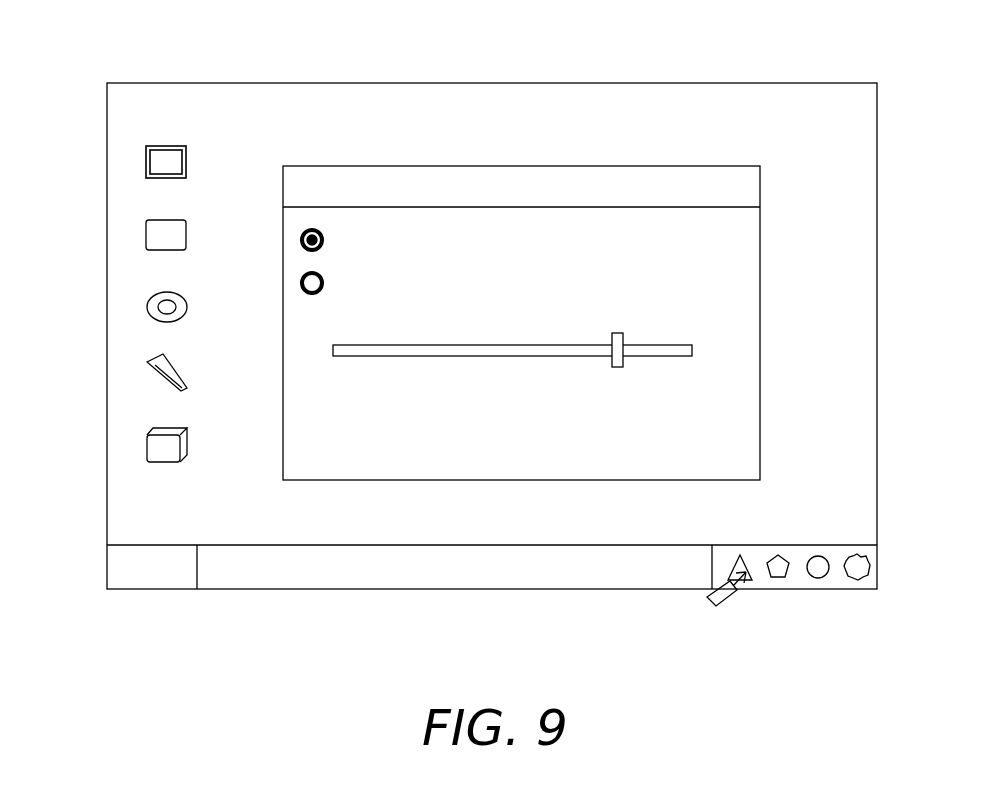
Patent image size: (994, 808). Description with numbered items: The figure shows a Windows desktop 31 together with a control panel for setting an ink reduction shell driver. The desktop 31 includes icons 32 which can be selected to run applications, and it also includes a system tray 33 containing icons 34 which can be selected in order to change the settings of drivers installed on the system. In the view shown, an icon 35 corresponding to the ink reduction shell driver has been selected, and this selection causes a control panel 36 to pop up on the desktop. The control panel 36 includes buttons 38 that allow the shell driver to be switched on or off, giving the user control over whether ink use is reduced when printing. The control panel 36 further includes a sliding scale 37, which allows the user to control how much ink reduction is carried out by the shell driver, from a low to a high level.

The Windows desktop 31 is at (507, 93).
The icons 32 is at (145, 168).
The system tray 33 is at (797, 589).
The icons 34 is at (857, 589).
The icon 35 is at (748, 590).
The control panel 36 is at (625, 228).
The sliding scale 37 is at (692, 349).
The buttons 38 is at (300, 240).